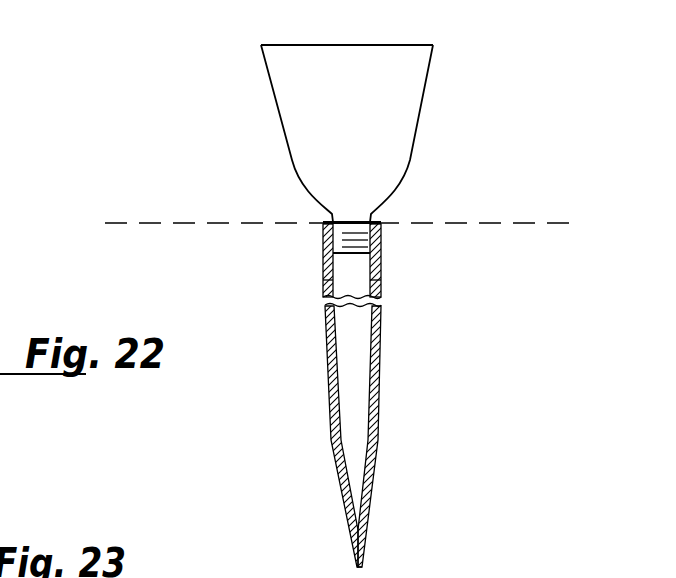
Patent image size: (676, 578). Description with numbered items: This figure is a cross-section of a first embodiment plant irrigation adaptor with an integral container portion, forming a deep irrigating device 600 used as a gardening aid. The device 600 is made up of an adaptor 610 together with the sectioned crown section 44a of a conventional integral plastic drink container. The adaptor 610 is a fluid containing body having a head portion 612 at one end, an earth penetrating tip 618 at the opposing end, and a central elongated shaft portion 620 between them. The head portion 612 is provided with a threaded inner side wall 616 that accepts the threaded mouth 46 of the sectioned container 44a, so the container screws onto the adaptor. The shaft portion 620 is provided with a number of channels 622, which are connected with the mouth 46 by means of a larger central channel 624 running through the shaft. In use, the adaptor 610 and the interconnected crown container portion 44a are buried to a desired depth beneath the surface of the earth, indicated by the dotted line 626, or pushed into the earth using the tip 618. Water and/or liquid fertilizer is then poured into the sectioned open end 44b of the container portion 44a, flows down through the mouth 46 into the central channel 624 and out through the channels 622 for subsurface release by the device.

The crown section 44a is at (275, 132).
The sectioned open end 44b is at (433, 44).
The deep irrigating device 600 is at (356, 232).
The dotted line 626 is at (527, 222).
The head portion 612 is at (323, 242).
The threaded inner side wall 616 is at (381, 237).
The threaded mouth 46 is at (350, 257).
The adaptor 610 is at (352, 436).
The central channel 624 is at (355, 372).
The channels 622 is at (333, 443).
The shaft portion 620 is at (380, 381).
The earth penetrating tip 618 is at (362, 567).